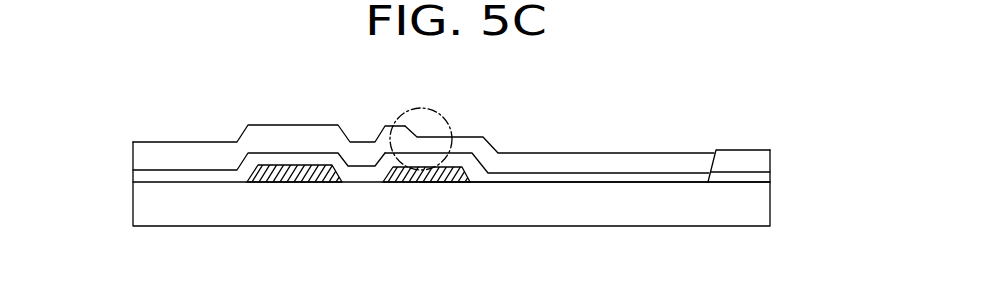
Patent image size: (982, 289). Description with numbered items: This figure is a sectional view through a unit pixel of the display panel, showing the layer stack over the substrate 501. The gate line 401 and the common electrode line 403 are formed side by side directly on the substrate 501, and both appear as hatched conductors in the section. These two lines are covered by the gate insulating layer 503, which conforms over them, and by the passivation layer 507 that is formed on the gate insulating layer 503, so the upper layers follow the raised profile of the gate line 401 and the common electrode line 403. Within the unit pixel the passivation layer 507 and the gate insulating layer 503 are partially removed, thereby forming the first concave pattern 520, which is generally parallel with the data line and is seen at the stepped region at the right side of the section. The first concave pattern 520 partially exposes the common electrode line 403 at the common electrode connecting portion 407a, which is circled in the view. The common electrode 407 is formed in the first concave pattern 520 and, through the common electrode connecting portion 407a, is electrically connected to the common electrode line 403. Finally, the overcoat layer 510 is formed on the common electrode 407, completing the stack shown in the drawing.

The gate line 401 is at (287, 183).
The common electrode line 403 is at (420, 167).
The common electrode 407 is at (582, 176).
The common electrode connecting portion 407a is at (447, 122).
The substrate 501 is at (208, 207).
The gate insulating layer 503 is at (163, 177).
The passivation layer 507 is at (167, 153).
The overcoat layer 510 is at (548, 162).
The first concave pattern 520 is at (653, 140).